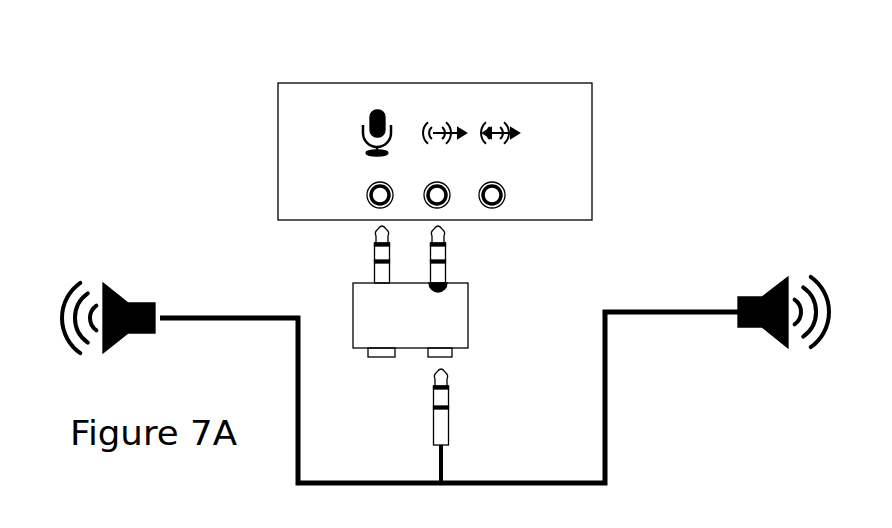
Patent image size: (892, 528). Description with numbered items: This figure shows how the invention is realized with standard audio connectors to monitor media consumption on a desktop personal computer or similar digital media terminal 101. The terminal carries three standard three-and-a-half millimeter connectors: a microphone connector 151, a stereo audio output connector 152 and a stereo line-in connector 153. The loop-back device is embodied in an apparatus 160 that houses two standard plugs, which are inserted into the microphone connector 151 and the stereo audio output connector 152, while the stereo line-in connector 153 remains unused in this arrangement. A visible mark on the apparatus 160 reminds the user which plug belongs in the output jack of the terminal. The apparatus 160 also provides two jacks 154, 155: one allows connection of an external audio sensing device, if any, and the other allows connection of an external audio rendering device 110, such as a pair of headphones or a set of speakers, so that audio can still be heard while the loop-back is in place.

The digital media terminal 101 is at (270, 82).
The external audio rendering device 110 is at (128, 348).
The microphone connector 151 is at (377, 103).
The stereo audio output connector 152 is at (448, 113).
The stereo line-in connector 153 is at (490, 107).
The 3.5 mm jack 154 is at (383, 362).
The 3.5 mm jack 155 is at (450, 362).
The apparatus 160 is at (478, 322).